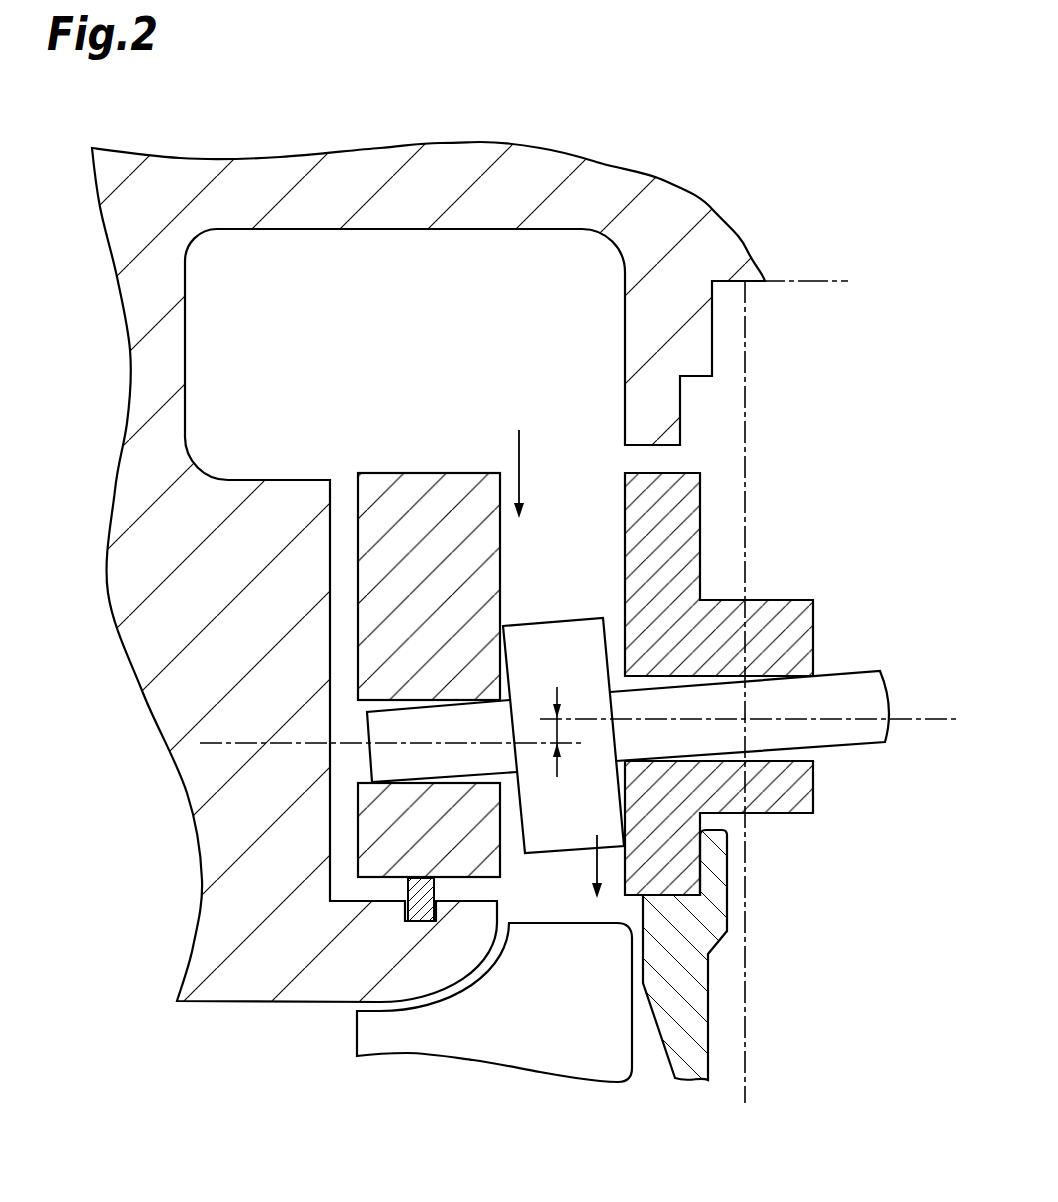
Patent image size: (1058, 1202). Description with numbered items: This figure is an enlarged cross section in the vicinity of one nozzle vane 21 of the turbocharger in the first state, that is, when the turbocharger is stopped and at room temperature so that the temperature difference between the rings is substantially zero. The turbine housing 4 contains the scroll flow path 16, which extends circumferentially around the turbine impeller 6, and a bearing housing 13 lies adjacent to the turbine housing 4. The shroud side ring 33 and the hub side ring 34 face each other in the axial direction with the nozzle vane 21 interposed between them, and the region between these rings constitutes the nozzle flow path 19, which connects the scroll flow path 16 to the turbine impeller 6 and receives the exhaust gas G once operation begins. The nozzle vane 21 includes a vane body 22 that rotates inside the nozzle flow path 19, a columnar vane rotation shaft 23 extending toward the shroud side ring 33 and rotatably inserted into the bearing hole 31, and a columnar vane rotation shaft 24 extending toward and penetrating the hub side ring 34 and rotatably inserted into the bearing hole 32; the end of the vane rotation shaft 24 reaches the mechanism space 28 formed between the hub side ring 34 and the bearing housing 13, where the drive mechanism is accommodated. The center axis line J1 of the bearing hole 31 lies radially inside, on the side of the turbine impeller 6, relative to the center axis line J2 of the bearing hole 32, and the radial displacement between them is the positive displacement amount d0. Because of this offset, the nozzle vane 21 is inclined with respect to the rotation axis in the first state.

The turbine housing 4 is at (213, 572).
The scroll flow path 16 is at (366, 340).
The bearing housing 13 is at (826, 280).
The mechanism space 28 is at (788, 488).
The shroud side ring 33 is at (432, 497).
The vane rotation shaft 23 is at (425, 795).
The hub side ring 34 is at (643, 500).
The vane rotation shaft 24 is at (728, 743).
The nozzle flow path 19 is at (540, 553).
The bearing hole 31 is at (363, 725).
The nozzle vane 21 is at (568, 858).
The bearing hole 32 is at (735, 685).
The turbine impeller 6 is at (430, 1035).
The vane body 22 is at (530, 835).
The center axis line J1 is at (228, 742).
The center axis line J2 is at (935, 718).
The displacement amount d0 is at (560, 708).
The exhaust gas G is at (519, 450).